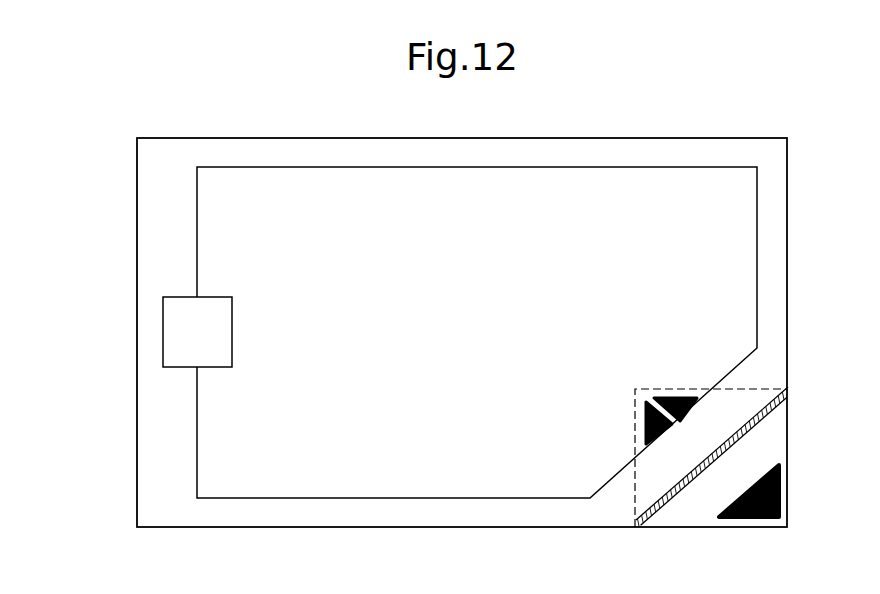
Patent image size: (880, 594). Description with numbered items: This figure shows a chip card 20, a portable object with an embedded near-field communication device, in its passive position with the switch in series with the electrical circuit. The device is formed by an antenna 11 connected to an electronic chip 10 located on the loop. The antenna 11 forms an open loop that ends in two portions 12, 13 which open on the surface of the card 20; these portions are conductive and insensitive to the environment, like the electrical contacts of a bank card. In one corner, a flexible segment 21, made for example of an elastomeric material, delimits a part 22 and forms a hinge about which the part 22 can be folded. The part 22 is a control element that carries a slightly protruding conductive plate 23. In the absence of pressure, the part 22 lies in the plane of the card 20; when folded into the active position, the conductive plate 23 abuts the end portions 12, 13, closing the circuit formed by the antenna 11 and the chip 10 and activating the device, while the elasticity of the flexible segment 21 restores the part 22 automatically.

The chip card 20 is at (86, 158).
The electronic chip 10 is at (183, 336).
The antenna 11 is at (757, 244).
The end portion 12 is at (677, 397).
The end portion 13 is at (644, 423).
The flexible segment 21 is at (757, 420).
The part 22 is at (693, 508).
The conductive plate 23 is at (782, 505).